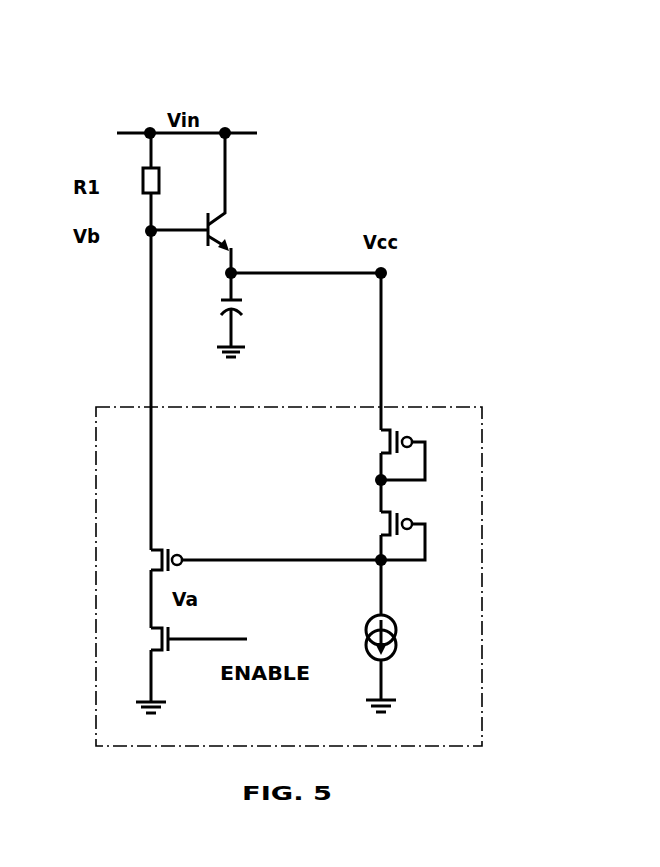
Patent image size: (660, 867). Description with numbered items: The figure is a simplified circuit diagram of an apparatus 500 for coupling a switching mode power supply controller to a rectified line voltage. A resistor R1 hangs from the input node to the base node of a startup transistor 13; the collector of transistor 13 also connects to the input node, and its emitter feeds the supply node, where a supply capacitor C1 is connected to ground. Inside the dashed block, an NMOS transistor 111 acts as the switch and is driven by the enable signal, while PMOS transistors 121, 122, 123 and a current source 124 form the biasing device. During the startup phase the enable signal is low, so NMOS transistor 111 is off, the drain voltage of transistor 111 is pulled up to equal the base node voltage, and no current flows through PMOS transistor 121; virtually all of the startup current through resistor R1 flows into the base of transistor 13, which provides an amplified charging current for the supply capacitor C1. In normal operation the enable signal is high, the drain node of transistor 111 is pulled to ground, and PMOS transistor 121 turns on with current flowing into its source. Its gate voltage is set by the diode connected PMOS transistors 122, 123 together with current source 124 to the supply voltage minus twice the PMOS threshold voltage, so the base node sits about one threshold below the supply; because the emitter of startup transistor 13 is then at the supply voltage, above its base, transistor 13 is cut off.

The apparatus for coupling an SMPS controller to a rectified line voltage 500 is at (522, 110).
The startup transistor 13 is at (239, 224).
The resistor R1 is at (137, 182).
The Vcc capacitor C1 is at (250, 300).
The PMOS transistor 121 is at (145, 560).
The diode connected PMOS transistor 122 is at (373, 518).
The diode connected PMOS transistor 123 is at (372, 442).
The current source 124 is at (402, 628).
The NMOS transistor 111 is at (145, 640).